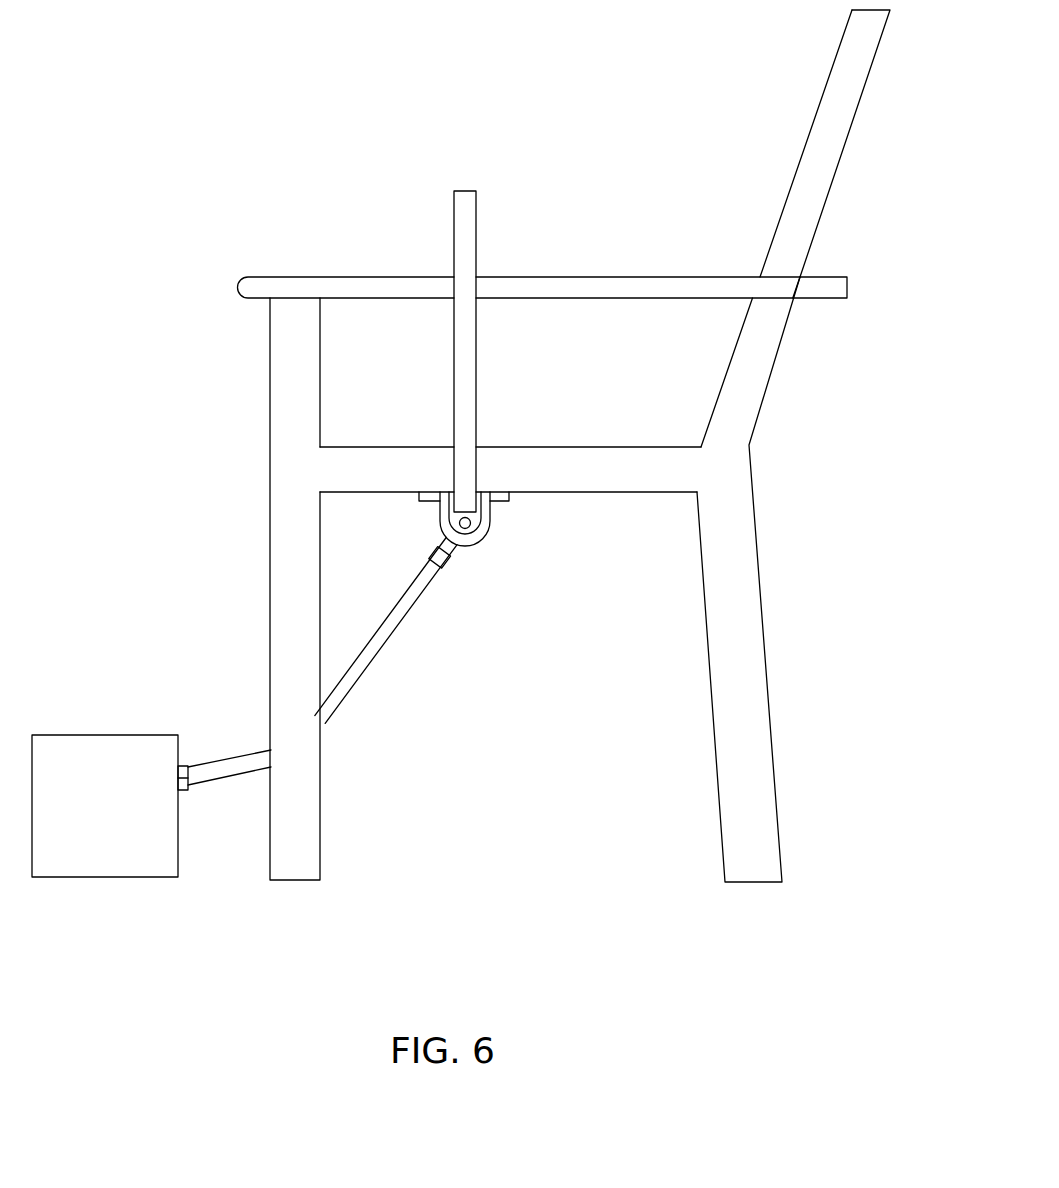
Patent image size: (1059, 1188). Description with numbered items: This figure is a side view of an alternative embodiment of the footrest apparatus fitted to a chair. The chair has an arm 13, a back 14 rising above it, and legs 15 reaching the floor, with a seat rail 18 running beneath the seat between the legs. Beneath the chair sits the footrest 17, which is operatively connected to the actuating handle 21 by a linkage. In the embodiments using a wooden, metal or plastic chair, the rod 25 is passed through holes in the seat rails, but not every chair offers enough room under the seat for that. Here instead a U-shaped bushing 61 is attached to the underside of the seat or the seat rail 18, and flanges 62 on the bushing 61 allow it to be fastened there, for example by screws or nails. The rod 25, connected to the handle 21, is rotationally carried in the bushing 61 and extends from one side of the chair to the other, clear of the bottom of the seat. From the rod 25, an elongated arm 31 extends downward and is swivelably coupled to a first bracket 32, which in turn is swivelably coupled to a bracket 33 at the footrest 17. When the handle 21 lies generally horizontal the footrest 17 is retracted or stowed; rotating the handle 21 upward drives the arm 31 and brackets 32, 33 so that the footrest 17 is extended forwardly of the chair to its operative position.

The arm 13 is at (624, 282).
The back 14 is at (838, 75).
The leg 15 is at (283, 544).
The footrest 17 is at (100, 750).
The seat rail 18 is at (380, 456).
The actuating handle 21 is at (478, 209).
The rod 25 is at (463, 540).
The elongated arm 31 is at (393, 627).
The first bracket 32 is at (236, 775).
The bracket 33 is at (188, 770).
The U-shaped bushing 61 is at (492, 538).
The flange 62 is at (422, 504).